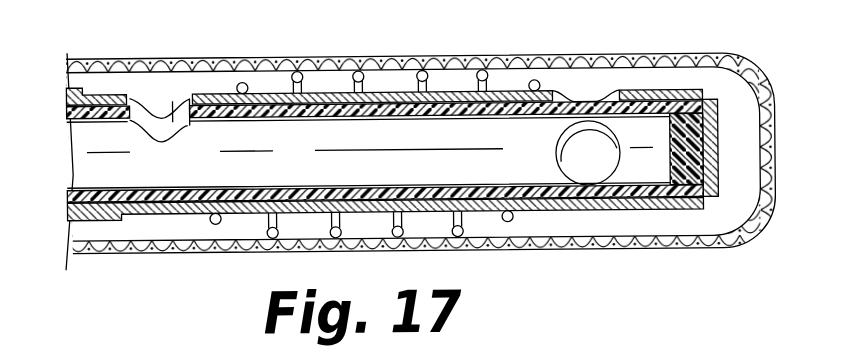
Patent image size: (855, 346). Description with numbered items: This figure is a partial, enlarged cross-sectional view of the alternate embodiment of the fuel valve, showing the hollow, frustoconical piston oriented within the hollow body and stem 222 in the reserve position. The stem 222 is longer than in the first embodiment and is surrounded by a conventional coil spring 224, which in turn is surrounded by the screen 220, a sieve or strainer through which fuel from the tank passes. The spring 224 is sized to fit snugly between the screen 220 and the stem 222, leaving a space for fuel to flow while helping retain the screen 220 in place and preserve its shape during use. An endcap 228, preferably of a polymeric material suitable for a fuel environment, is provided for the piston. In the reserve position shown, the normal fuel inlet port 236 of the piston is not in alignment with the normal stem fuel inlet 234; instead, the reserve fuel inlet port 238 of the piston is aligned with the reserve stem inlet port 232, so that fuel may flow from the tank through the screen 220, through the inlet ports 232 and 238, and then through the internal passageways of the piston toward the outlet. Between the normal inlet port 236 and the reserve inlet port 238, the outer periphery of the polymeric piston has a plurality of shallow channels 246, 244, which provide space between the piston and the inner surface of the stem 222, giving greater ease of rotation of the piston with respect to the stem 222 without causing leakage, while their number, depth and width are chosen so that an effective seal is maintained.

The screen 220 is at (460, 56).
The stem 222 is at (270, 99).
The coil spring 224 is at (368, 104).
The endcap 228 is at (682, 172).
The reserve stem inlet port 232 is at (145, 110).
The normal stem fuel inlet 234 is at (597, 102).
The normal fuel inlet port 236 is at (593, 162).
The reserve fuel inlet port 238 is at (152, 126).
The shallow channel 244 is at (258, 212).
The shallow channel 246 is at (338, 94).